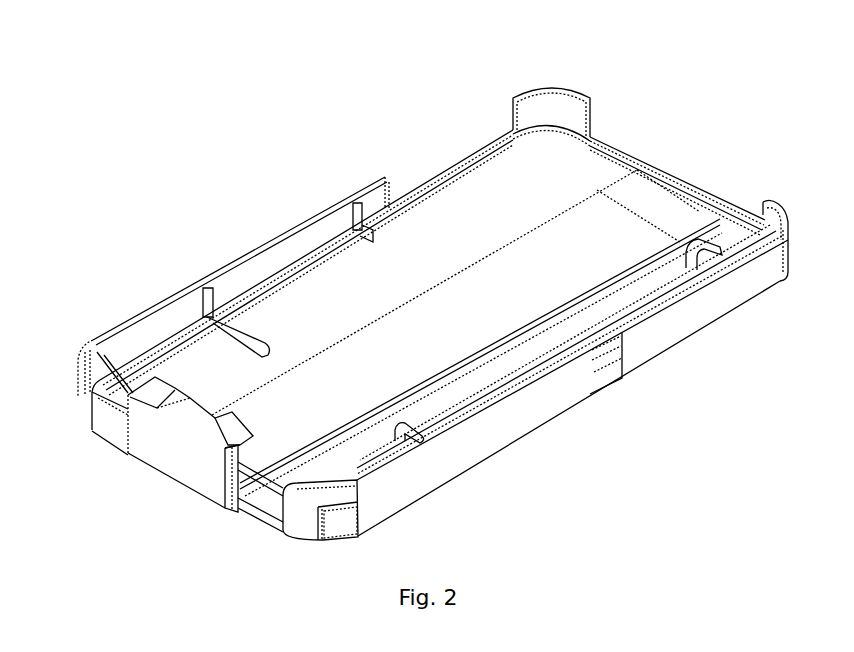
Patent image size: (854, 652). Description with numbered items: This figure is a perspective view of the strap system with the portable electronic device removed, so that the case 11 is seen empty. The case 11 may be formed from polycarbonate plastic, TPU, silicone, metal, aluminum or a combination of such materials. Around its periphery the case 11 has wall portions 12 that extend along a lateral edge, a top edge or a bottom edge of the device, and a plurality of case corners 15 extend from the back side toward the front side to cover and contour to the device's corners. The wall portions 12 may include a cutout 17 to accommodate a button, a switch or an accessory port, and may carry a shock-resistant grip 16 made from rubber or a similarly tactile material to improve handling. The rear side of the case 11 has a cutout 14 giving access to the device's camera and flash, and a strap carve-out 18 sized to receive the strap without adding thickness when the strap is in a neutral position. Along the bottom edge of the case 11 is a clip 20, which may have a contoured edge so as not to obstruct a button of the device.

The case 11 is at (283, 148).
The wall portion 12 is at (610, 141).
The cutout 14 is at (718, 245).
The case corner 15 is at (307, 523).
The shock-resistant grip 16 is at (587, 377).
The cutout 17 is at (453, 148).
The strap carve-out 18 is at (433, 337).
The clip 20 is at (162, 456).